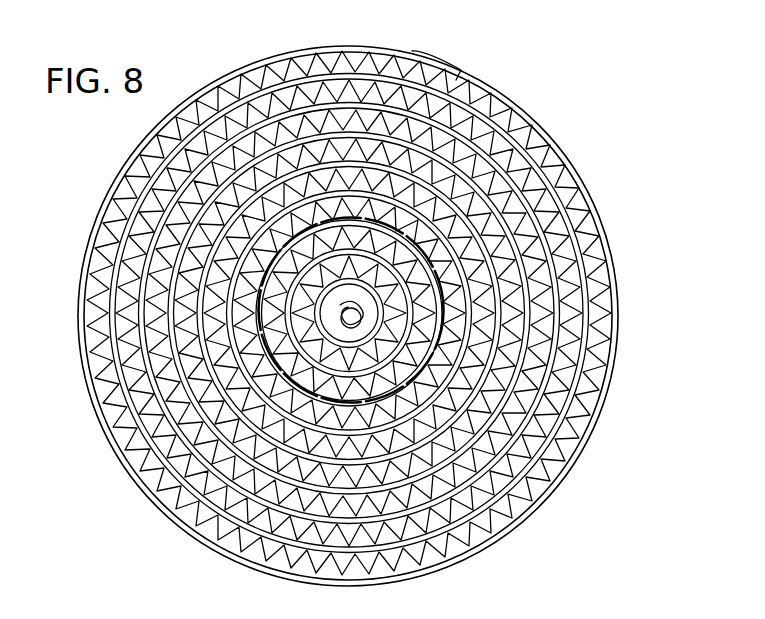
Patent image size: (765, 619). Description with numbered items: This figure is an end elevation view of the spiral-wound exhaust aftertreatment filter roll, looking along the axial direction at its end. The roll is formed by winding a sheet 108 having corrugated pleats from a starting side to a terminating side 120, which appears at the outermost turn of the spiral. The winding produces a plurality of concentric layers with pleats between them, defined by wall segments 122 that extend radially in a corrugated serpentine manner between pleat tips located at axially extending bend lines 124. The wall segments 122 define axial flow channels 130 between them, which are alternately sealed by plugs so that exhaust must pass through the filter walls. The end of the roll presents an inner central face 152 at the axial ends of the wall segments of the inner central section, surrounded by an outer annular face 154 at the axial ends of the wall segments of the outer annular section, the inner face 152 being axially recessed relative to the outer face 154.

The sheet 108 is at (350, 43).
The terminating side 120 is at (466, 71).
The wall segments 122 is at (564, 193).
The bend lines 124 is at (557, 201).
The axial flow channels 130 is at (607, 292).
The inner central face 152 is at (433, 322).
The outer annular face 154 is at (530, 395).